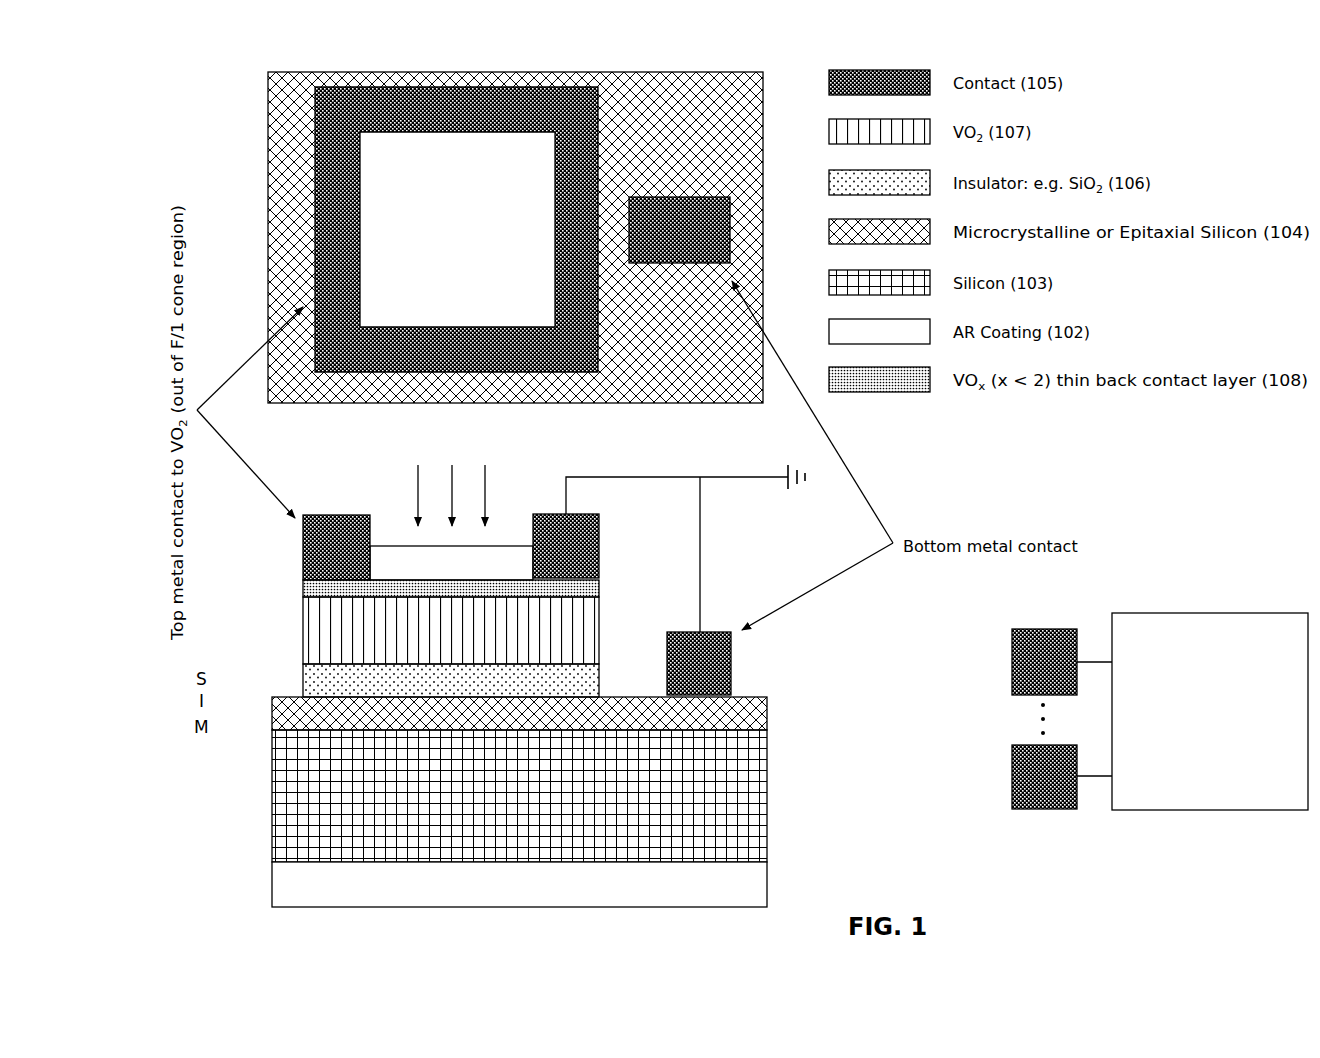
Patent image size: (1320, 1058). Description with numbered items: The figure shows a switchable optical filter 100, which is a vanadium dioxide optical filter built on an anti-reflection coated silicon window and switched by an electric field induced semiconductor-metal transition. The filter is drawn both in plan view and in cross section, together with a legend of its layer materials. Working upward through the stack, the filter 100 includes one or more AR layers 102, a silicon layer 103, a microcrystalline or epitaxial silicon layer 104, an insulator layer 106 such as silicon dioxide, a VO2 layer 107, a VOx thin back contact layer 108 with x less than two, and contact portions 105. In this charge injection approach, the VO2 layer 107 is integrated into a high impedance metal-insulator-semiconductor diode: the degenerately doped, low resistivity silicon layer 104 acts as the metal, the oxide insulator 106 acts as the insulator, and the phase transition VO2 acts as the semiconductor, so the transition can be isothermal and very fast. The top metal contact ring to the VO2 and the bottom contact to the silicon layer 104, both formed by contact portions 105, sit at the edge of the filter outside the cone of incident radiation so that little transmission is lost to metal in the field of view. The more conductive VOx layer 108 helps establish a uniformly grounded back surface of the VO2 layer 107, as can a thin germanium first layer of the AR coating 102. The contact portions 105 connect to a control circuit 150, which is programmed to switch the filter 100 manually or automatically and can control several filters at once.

The switchable optical filter 100 is at (228, 57).
The AR layer 102 is at (440, 246).
The silicon layer 103 is at (768, 775).
The microcrystalline or epitaxial silicon layer 104 is at (743, 72).
The contact portion 105 is at (600, 92).
The insulator layer 106 is at (303, 688).
The VO2 layer 107 is at (600, 636).
The VOx thin back contact layer 108 is at (600, 587).
The control circuit 150 is at (1194, 744).